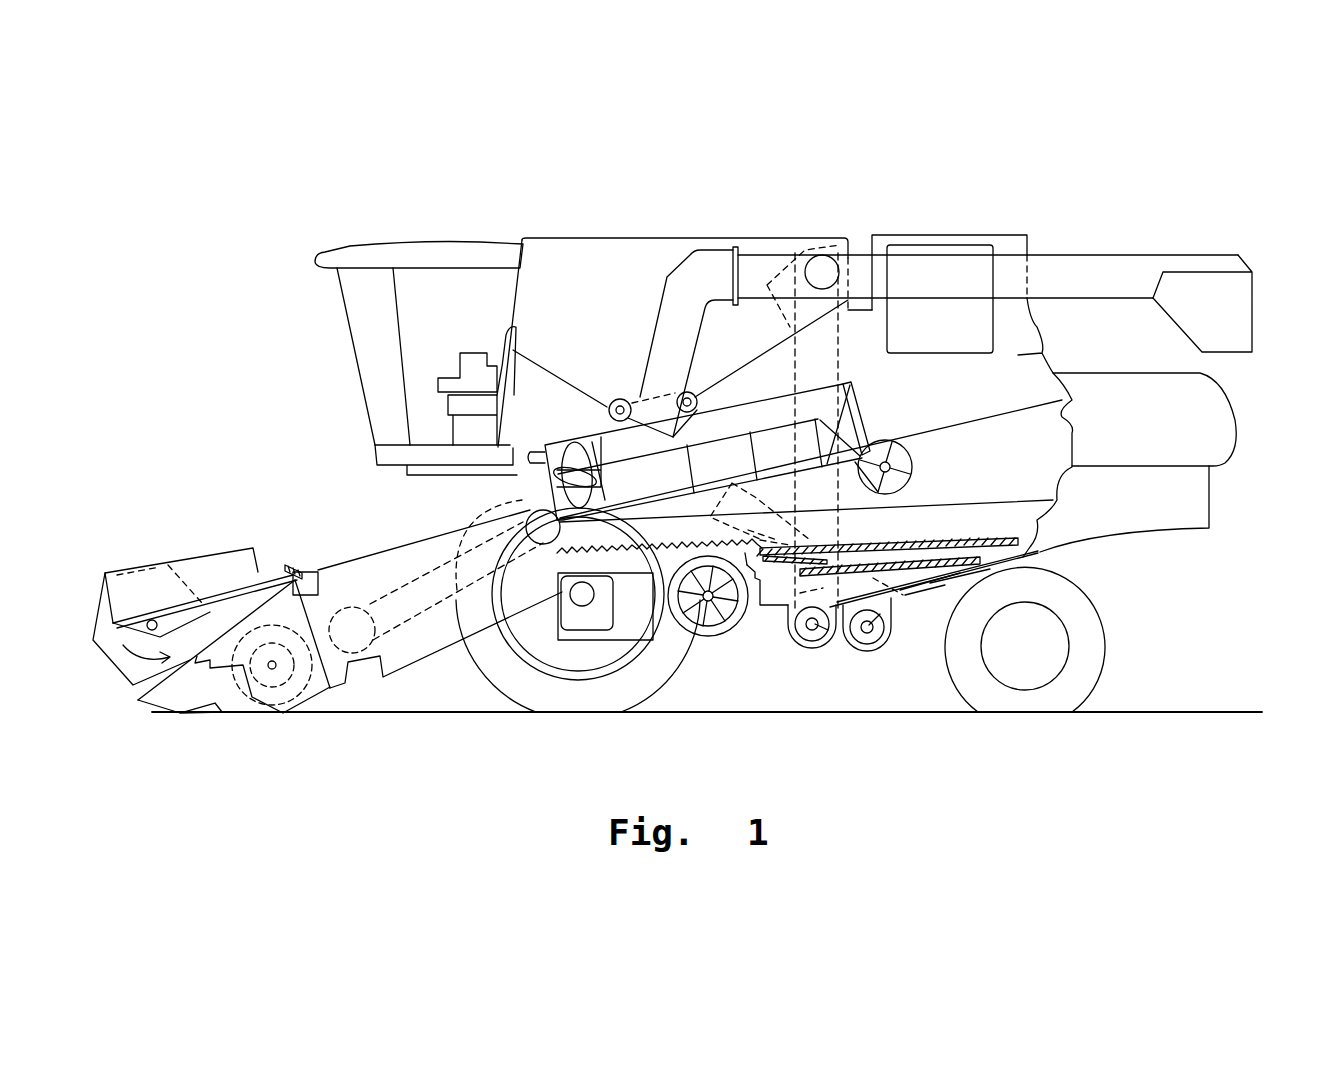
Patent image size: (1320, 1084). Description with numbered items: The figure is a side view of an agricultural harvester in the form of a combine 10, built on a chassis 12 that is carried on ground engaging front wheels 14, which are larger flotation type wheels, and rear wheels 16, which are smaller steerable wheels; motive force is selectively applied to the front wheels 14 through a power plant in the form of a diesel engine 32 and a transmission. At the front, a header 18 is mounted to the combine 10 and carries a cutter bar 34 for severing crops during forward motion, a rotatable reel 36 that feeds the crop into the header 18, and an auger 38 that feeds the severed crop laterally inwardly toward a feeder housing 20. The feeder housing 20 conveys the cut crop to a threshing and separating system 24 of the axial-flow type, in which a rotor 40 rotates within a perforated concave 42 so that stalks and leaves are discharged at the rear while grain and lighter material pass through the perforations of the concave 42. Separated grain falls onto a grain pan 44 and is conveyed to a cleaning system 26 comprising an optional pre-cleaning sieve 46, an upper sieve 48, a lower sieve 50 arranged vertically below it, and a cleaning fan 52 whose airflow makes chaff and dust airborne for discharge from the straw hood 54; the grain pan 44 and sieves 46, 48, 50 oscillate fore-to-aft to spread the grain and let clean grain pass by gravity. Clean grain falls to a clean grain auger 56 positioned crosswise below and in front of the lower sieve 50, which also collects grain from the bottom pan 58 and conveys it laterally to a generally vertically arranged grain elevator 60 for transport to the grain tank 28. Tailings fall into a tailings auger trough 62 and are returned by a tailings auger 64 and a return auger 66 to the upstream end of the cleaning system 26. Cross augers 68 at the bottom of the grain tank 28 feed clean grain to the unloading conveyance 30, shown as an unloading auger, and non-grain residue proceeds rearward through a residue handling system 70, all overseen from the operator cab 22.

The combine 10 is at (410, 226).
The chassis 12 is at (1037, 555).
The front wheels 14 is at (492, 673).
The rear wheels 16 is at (1104, 655).
The header 18 is at (194, 548).
The feeder housing 20 is at (388, 554).
The operator cab 22 is at (350, 335).
The threshing and separating system 24 is at (490, 493).
The cleaning system 26 is at (767, 650).
The grain tank 28 is at (572, 240).
The unloading conveyance 30 is at (1112, 265).
The diesel engine 32 is at (930, 245).
The cutter bar 34 is at (207, 713).
The rotatable reel 36 is at (105, 615).
The auger 38 is at (274, 689).
The rotor 40 is at (573, 450).
The perforated concave 42 is at (746, 430).
The grain pan 44 is at (555, 570).
The pre-cleaning sieve 46 is at (840, 552).
The upper sieve 48 is at (947, 540).
The lower sieve 50 is at (914, 584).
The cleaning fan 52 is at (704, 636).
The straw hood 54 is at (1215, 415).
The clean grain auger 56 is at (812, 642).
The bottom pan 58 is at (962, 577).
The grain elevator 60 is at (848, 357).
The tailings auger trough 62 is at (944, 584).
The tailings auger 64 is at (867, 646).
The return auger 66 is at (787, 532).
The cross augers 68 is at (618, 398).
The residue handling system 70 is at (1180, 539).